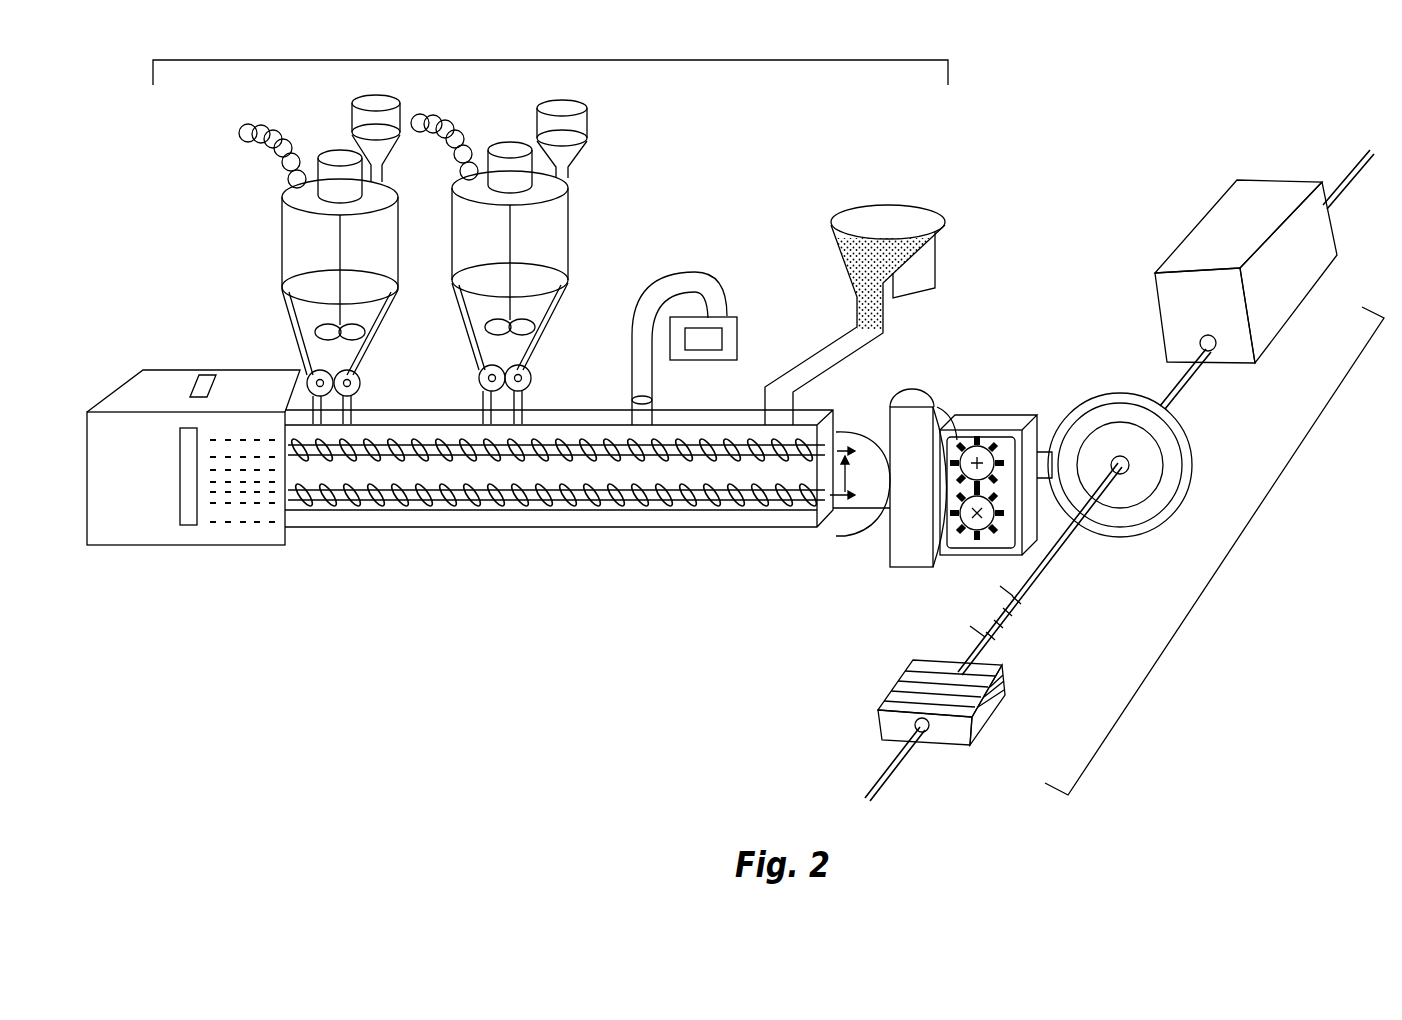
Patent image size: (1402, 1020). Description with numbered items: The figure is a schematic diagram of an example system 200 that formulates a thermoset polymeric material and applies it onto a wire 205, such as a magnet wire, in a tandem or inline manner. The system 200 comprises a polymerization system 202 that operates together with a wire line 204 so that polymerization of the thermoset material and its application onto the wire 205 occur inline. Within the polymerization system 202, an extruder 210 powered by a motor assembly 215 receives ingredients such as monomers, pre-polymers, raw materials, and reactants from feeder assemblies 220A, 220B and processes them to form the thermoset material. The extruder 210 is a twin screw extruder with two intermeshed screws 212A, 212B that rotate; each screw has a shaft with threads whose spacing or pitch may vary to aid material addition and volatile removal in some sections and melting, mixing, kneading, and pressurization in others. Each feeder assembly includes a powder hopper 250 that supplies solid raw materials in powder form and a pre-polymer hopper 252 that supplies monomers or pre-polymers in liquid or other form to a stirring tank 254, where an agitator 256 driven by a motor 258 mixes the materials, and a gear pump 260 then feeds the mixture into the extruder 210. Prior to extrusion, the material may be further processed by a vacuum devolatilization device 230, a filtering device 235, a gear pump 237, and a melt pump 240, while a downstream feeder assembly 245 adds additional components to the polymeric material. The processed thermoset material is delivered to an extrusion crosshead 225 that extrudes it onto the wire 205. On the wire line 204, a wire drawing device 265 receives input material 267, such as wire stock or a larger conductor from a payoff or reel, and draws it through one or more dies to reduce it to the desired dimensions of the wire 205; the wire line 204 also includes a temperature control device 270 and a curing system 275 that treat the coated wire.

The system 200 is at (1222, 760).
The polymerization system 202 is at (550, 59).
The wire line 204 is at (1214, 551).
The wire 205 is at (1050, 576).
The extruder 210 is at (367, 520).
The screw 212A is at (773, 507).
The screw 212B is at (830, 512).
The motor assembly 215 is at (163, 540).
The feeder assembly 220A is at (306, 254).
The feeder assembly 220B is at (600, 177).
The extrusion crosshead 225 is at (1110, 388).
The vacuum devolatilization device 230 is at (723, 297).
The filtering device 235 is at (913, 385).
The gear pump 237 is at (975, 523).
The melt pump 240 is at (972, 476).
The downstream feeder assembly 245 is at (872, 200).
The powder hopper 250 is at (275, 127).
The pre-polymer hopper 252 is at (412, 97).
The stirring tank 254 is at (275, 228).
The agitator 256 is at (283, 330).
The motor 258 is at (325, 150).
The gear pump 260 is at (368, 382).
The wire drawing device 265 is at (987, 735).
The input material 267 is at (866, 783).
The temperature control device 270 is at (1015, 627).
The curing system 275 is at (1183, 293).